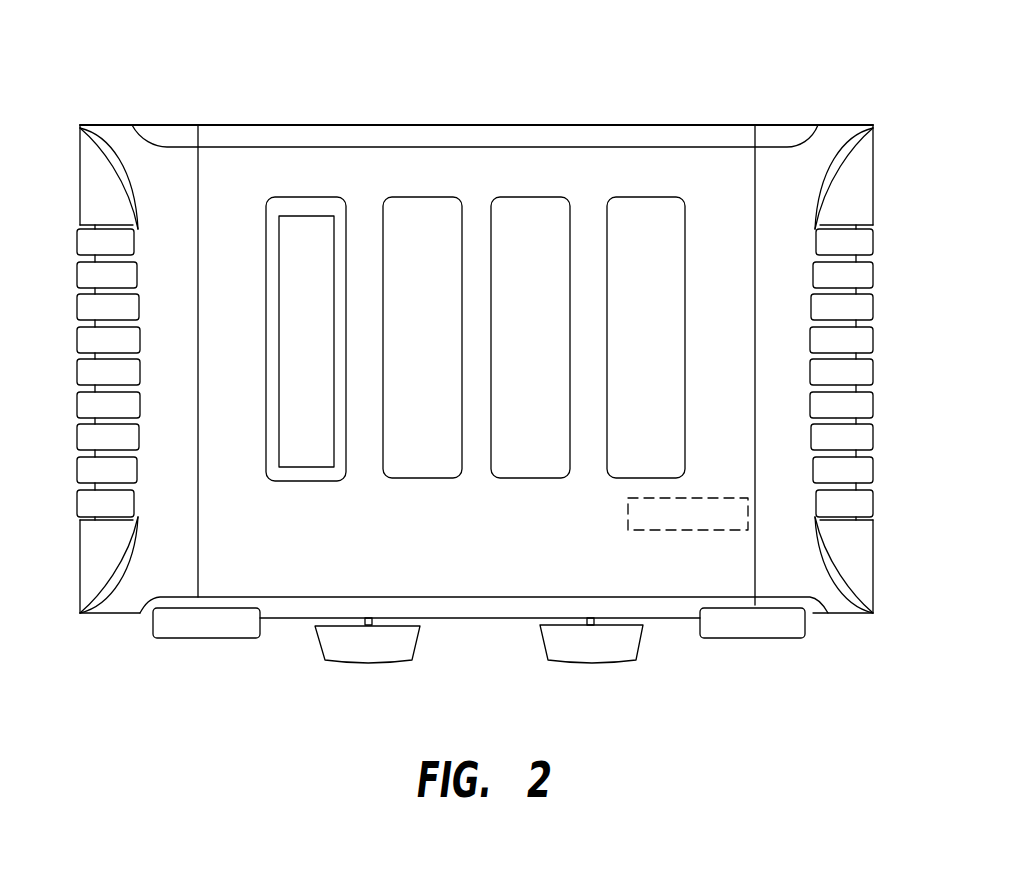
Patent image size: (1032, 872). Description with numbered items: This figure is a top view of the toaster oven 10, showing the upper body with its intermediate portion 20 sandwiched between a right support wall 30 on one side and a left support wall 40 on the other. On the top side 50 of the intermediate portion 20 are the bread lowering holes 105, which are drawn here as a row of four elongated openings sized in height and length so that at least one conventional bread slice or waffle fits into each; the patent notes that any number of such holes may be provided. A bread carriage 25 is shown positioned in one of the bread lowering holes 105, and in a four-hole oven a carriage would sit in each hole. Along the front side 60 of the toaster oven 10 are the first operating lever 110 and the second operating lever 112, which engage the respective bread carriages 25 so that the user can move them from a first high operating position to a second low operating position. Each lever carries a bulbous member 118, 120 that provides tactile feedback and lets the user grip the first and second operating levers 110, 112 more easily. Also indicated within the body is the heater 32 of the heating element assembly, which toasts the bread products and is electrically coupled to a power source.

The toaster oven 10 is at (680, 72).
The intermediate portion 20 is at (228, 147).
The bread carriage 25 is at (298, 218).
The right support wall 30 is at (797, 570).
The heater 32 is at (690, 530).
The left support wall 40 is at (157, 578).
The top side 50 is at (472, 215).
The front side 60 is at (471, 618).
The bread lowering holes 105 is at (407, 344).
The first operating lever 110 is at (367, 618).
The second operating lever 112 is at (590, 618).
The bulbous member 118 is at (597, 648).
The bulbous member 120 is at (368, 648).